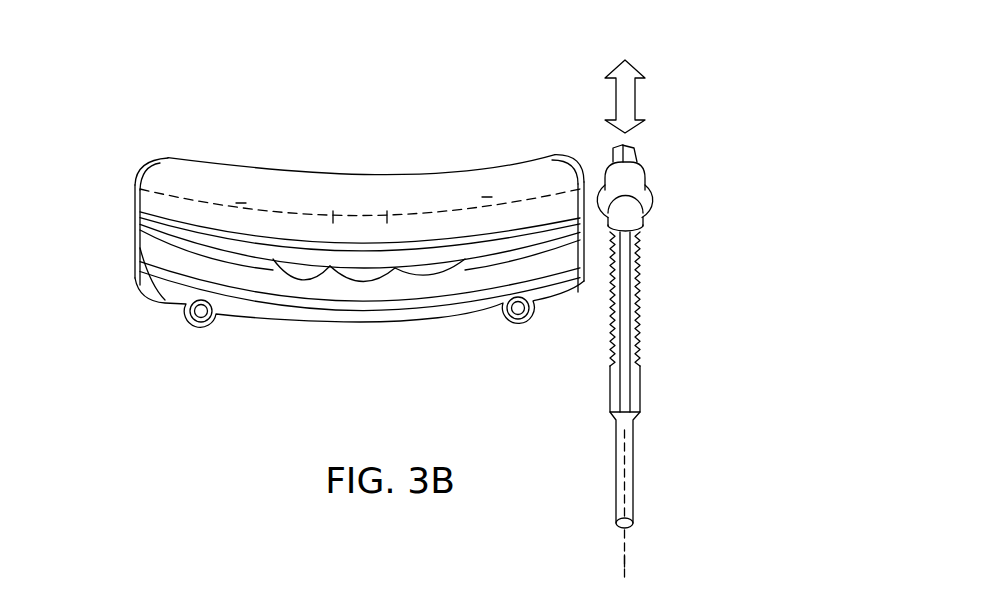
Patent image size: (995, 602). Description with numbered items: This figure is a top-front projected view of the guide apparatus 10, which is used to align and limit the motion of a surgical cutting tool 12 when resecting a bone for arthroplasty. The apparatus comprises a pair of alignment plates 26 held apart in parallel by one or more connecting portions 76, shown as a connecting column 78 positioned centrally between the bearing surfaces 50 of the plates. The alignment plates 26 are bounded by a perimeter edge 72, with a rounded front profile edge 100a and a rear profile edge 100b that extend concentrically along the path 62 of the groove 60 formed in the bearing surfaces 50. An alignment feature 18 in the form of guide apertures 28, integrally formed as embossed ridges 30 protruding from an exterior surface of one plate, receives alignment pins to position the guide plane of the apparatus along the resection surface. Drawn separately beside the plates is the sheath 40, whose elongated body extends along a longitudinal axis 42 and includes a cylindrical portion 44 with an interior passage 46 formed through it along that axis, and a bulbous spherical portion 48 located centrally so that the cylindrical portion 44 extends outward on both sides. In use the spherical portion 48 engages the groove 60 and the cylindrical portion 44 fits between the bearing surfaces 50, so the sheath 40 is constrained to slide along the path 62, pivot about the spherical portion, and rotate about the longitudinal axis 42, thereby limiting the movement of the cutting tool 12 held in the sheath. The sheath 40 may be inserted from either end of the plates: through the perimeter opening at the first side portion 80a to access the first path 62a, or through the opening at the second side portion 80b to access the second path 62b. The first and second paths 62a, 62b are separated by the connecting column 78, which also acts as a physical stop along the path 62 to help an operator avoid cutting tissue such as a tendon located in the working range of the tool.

The guide apparatus 10 is at (474, 72).
The surgical cutting tool 12 is at (632, 372).
The alignment feature 18 is at (513, 337).
The alignment plates 26 is at (152, 166).
The guide apertures 28 is at (199, 313).
The embossed ridges 30 is at (220, 325).
The sheath 40 is at (651, 321).
The longitudinal axis 42 is at (626, 561).
The cylindrical portion 44 is at (638, 171).
The interior passage 46 is at (605, 260).
The spherical portion 48 is at (650, 202).
The bearing surfaces 50 is at (262, 287).
The groove 60 is at (468, 272).
The path 62 is at (360, 153).
The first path 62a is at (242, 205).
The second path 62b is at (487, 197).
The perimeter edge 72 is at (169, 153).
The connecting portions 76 is at (369, 321).
The connecting column 78 is at (370, 282).
The first side portion 80a is at (115, 210).
The second side portion 80b is at (591, 239).
The front profile edge 100a is at (334, 168).
The rear profile edge 100b is at (200, 249).